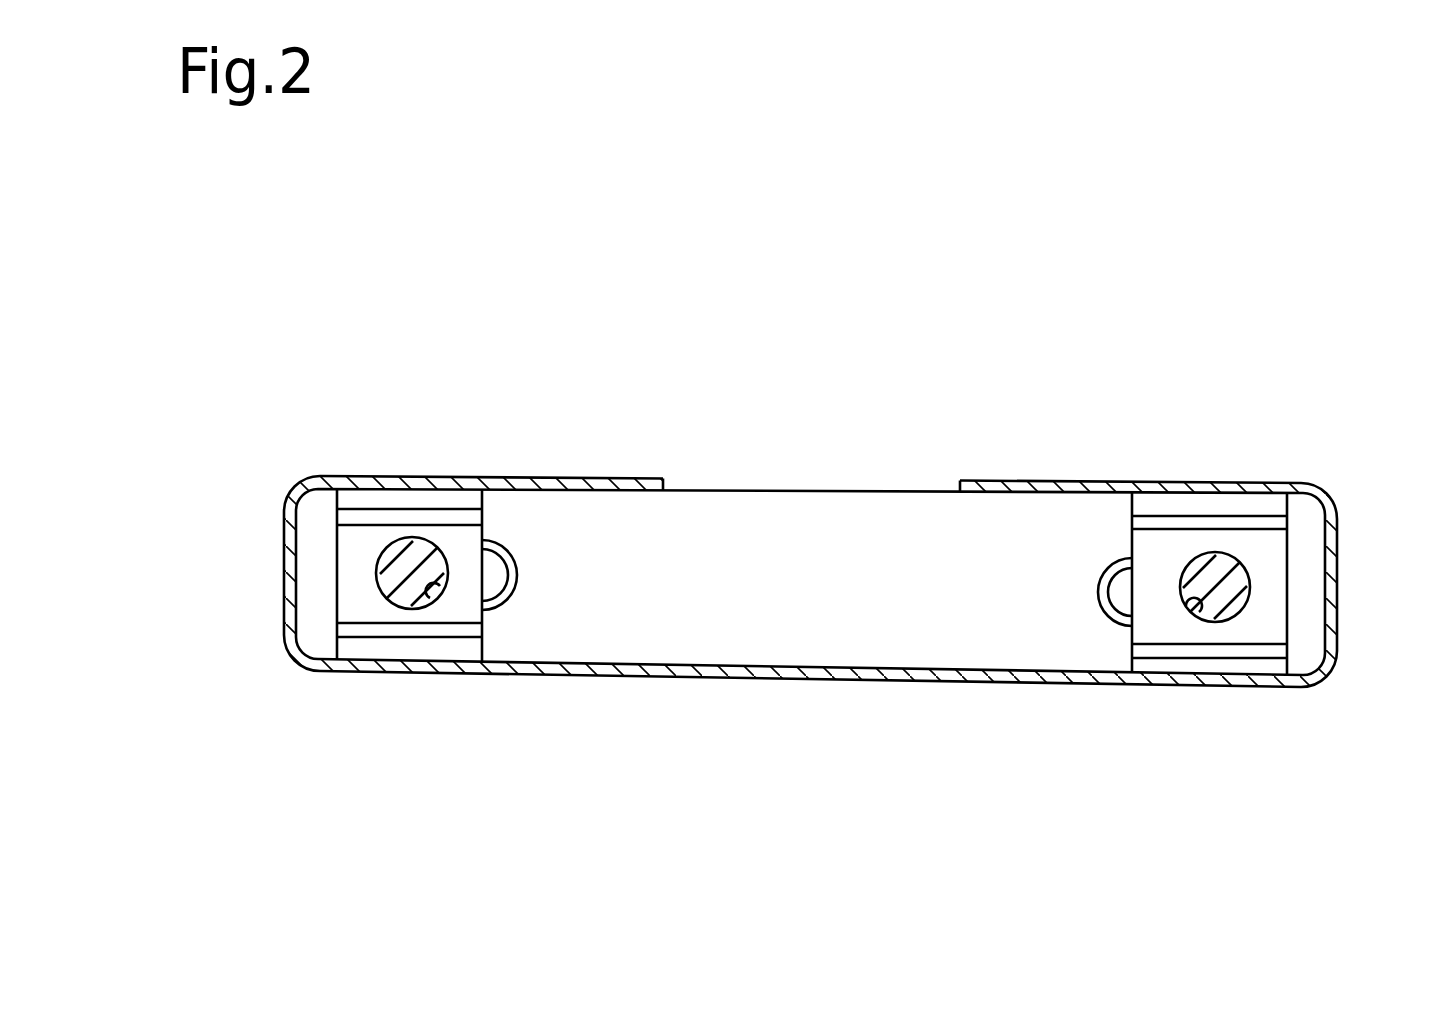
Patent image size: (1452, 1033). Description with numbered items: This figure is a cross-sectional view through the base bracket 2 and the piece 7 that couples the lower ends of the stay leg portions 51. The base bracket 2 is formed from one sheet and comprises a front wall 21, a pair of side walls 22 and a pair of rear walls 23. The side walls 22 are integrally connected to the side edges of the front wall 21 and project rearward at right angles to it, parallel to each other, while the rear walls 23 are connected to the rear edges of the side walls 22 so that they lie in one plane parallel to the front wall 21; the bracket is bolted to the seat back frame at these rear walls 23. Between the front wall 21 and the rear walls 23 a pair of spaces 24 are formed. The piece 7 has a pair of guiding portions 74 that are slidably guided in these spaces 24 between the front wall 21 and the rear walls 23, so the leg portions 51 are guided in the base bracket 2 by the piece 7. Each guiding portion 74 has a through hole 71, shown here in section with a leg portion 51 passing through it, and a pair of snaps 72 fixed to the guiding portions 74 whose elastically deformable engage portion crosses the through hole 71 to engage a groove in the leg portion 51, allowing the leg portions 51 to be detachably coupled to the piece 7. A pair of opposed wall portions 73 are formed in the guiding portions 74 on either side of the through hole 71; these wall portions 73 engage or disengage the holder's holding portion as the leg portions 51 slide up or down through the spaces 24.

The base bracket 2 is at (727, 708).
The front wall 21 is at (897, 673).
The side walls 22 is at (1337, 608).
The rear walls 23 is at (1167, 483).
The spaces 24 is at (1300, 633).
The piece 7 is at (807, 462).
The leg portions 51 is at (1222, 558).
The through hole 71 is at (1182, 604).
The snaps 72 is at (1100, 567).
The wall portions 73 is at (1217, 650).
The guiding portions 74 is at (1268, 588).